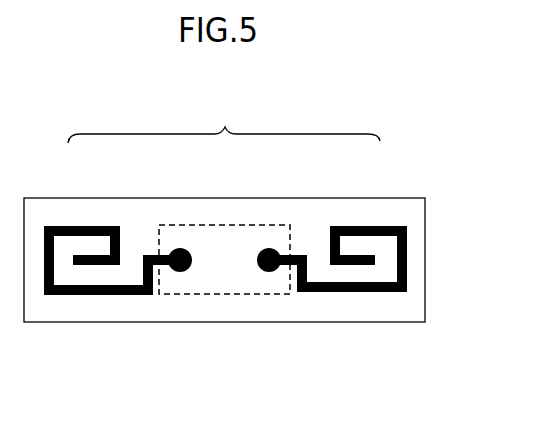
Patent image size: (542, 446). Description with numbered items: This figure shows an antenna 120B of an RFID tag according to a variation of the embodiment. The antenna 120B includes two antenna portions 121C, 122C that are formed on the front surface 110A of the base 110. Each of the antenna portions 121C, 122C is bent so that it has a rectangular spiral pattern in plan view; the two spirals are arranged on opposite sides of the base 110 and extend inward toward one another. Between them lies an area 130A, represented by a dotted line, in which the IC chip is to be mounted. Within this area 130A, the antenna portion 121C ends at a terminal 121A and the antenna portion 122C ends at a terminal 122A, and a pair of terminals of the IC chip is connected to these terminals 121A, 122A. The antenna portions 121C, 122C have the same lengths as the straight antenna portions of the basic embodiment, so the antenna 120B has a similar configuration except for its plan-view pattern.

The base 110 is at (425, 215).
The front surface 110A is at (405, 214).
The antenna 120B is at (224, 123).
The antenna portion 121C is at (98, 226).
The antenna portion 122C is at (352, 226).
The terminal 121A is at (182, 272).
The terminal 122A is at (270, 272).
The area 130A is at (228, 295).